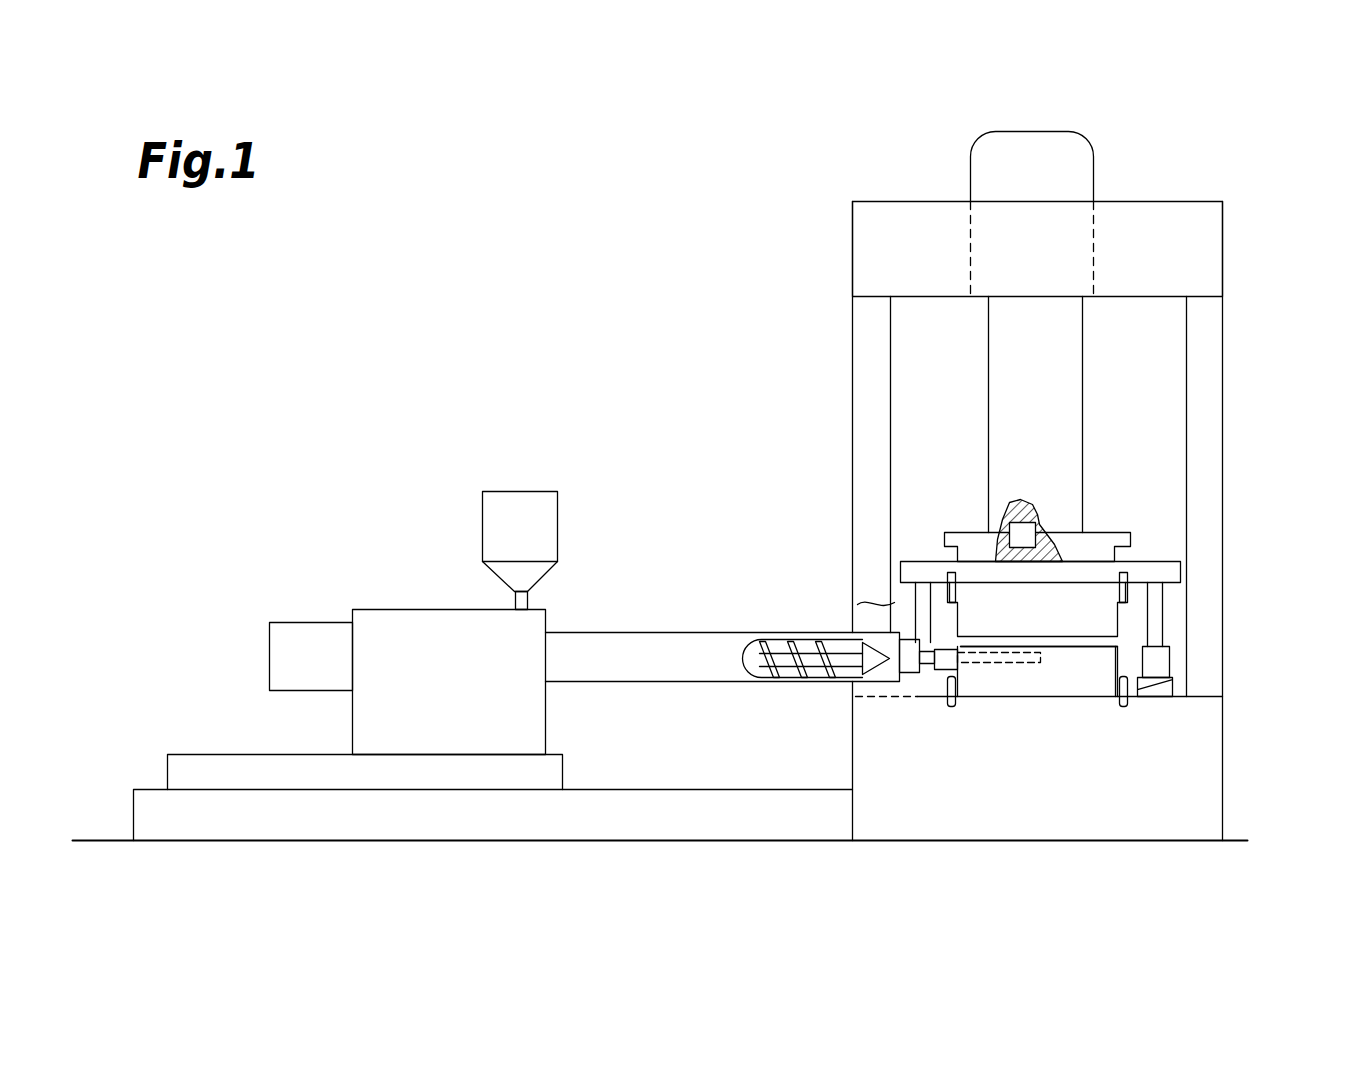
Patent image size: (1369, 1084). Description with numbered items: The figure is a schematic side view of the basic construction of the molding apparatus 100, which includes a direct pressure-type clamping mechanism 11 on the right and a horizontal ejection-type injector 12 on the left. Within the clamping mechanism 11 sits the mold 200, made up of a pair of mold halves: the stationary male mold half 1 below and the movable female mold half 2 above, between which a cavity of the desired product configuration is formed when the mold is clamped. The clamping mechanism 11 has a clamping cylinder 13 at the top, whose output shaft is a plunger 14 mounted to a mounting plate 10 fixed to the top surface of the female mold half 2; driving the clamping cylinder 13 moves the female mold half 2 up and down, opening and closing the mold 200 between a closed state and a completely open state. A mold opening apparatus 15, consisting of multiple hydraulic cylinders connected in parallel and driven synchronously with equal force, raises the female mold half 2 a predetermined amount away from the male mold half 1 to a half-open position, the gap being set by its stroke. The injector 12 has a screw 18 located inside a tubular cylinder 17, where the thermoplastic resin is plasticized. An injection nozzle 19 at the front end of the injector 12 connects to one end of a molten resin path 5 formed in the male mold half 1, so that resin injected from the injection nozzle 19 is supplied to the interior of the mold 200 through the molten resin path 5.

The molding apparatus 100 is at (1226, 388).
The clamping mechanism 11 is at (805, 228).
The injector 12 is at (444, 524).
The clamping cylinder 13 is at (1070, 162).
The plunger 14 is at (1050, 349).
The mounting plate 10 is at (1172, 573).
The mold opening apparatus 15 is at (927, 623).
The cylinder 17 is at (670, 632).
The screw 18 is at (787, 655).
The injection nozzle 19 is at (933, 662).
The female mold half 2 is at (1060, 625).
The male mold half 1 is at (1057, 678).
The molten resin path 5 is at (1005, 672).
The mold 200 is at (1128, 663).